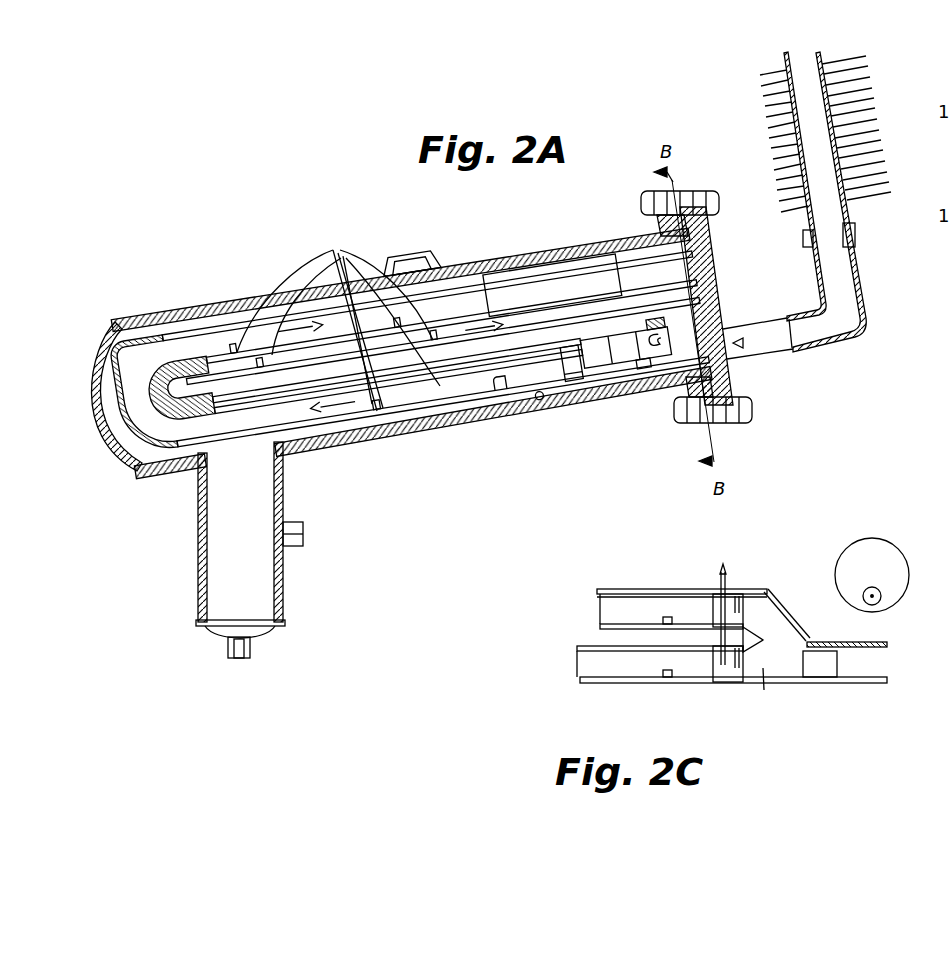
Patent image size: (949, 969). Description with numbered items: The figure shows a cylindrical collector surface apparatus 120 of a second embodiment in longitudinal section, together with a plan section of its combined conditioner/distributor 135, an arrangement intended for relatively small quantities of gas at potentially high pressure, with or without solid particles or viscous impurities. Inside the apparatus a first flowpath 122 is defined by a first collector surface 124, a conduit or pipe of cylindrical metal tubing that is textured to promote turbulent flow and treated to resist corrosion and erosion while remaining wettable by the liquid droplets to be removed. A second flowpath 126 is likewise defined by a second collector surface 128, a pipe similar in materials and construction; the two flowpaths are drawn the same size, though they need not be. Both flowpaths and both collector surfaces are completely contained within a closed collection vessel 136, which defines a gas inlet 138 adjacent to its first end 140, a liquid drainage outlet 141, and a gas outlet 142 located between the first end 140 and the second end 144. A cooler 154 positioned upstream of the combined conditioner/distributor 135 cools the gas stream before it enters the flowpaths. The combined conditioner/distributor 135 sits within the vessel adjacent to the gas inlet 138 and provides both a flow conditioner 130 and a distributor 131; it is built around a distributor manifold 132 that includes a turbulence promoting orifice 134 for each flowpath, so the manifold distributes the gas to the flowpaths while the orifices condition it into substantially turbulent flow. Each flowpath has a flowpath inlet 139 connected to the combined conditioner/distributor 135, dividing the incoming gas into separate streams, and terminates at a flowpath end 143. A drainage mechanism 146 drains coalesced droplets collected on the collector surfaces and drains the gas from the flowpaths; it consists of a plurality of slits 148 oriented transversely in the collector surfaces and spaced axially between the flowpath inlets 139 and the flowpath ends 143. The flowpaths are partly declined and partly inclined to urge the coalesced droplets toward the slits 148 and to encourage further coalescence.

In FIG. 2A, the cylindrical collector surface apparatus 120 is at (258, 247).
In FIG. 2A, the first flowpath 122 is at (150, 468).
In FIG. 2C, the first flowpath 122 is at (577, 662).
In FIG. 2A, the first collector surface 124 is at (190, 332).
In FIG. 2C, the first collector surface 124 is at (600, 680).
In FIG. 2A, the second flowpath 126 is at (488, 322).
In FIG. 2C, the second flowpath 126 is at (600, 608).
In FIG. 2A, the second collector surface 128 is at (463, 395).
In FIG. 2C, the second collector surface 128 is at (655, 589).
In FIG. 2A, the flow conditioner 130 is at (600, 372).
In FIG. 2C, the flow conditioner 130 is at (778, 655).
In FIG. 2C, the distributor 131 is at (802, 633).
In FIG. 2A, the distributor manifold 132 is at (627, 367).
In FIG. 2C, the distributor manifold 132 is at (765, 690).
In FIG. 2A, the turbulence promoting orifice 134 is at (538, 398).
In FIG. 2C, the turbulence promoting orifice 134 is at (745, 670).
In FIG. 2A, the combined conditioner/distributor 135 is at (578, 403).
In FIG. 2C, the combined conditioner/distributor 135 is at (812, 680).
In FIG. 2A, the collection vessel 136 is at (240, 300).
In FIG. 2A, the gas inlet 138 is at (743, 345).
In FIG. 2C, the flowpath inlet 139 is at (724, 572).
In FIG. 2A, the first end 140 is at (727, 432).
In FIG. 2A, the liquid drainage outlet 141 is at (243, 657).
In FIG. 2A, the gas outlet 142 is at (405, 250).
In FIG. 2A, the flowpath end 143 is at (582, 264).
In FIG. 2A, the second end 144 is at (96, 388).
In FIG. 2A, the drainage mechanism 146 is at (330, 252).
In FIG. 2C, the drainage mechanism 146 is at (668, 682).
In FIG. 2A, the slits 148 is at (336, 319).
In FIG. 2C, the slits 148 is at (724, 692).
In FIG. 2A, the cooler 154 is at (760, 88).